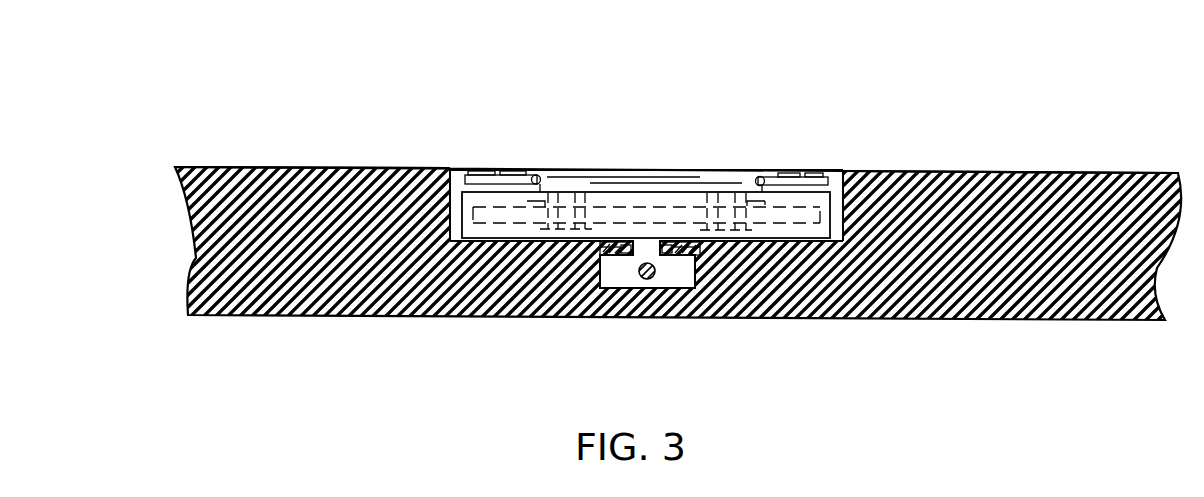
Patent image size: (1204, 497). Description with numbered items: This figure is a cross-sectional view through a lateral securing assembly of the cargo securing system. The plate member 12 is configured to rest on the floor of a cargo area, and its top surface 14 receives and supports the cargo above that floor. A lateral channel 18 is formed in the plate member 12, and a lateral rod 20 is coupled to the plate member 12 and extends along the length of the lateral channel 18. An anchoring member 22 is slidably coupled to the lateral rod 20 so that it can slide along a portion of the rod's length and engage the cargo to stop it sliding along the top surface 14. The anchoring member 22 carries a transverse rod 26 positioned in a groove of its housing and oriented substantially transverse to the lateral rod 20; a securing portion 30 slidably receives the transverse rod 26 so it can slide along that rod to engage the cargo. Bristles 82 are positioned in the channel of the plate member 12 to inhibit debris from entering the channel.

The plate member 12 is at (1063, 297).
The top surface 14 is at (1085, 170).
The lateral channel 18 is at (835, 186).
The lateral rod 20 is at (650, 279).
The anchoring member 22 is at (698, 192).
The transverse rod 26 is at (626, 210).
The securing portion 30 is at (802, 176).
The bristles 82 is at (710, 252).